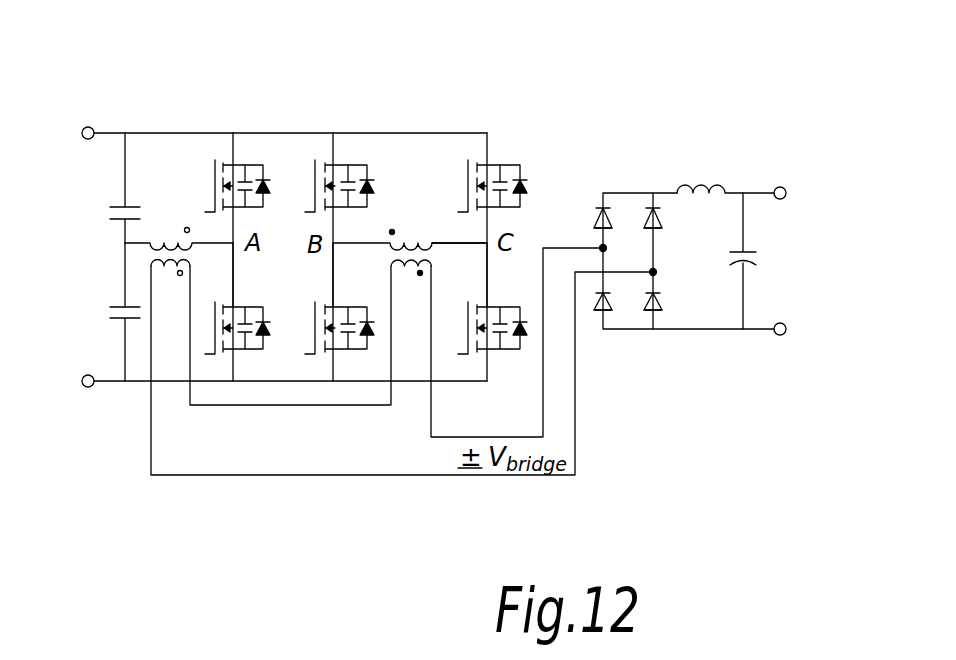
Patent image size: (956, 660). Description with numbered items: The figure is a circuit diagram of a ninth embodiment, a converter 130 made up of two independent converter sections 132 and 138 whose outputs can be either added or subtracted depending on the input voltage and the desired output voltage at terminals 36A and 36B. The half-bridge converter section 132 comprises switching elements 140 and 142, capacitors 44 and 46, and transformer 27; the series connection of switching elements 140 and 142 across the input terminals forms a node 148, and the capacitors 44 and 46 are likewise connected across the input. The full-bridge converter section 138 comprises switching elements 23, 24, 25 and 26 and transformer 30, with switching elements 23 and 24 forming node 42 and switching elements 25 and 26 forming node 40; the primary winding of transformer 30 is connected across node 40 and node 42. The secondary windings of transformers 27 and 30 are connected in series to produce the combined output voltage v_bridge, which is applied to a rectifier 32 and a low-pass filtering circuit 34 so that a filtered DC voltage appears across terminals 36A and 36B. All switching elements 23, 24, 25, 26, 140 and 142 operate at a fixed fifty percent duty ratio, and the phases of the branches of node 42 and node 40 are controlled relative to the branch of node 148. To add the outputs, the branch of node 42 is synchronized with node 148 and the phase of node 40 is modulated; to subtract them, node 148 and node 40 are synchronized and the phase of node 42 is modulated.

The converter 130 is at (100, 95).
The converter section 132 is at (227, 94).
The converter section 138 is at (489, 93).
The switching element 140 is at (250, 165).
The switching element 142 is at (253, 350).
The switching element 23 is at (340, 165).
The switching element 24 is at (338, 305).
The switching element 25 is at (493, 165).
The switching element 26 is at (503, 350).
The transformer 27 is at (205, 243).
The node 148 is at (234, 247).
The second node 42 is at (333, 243).
The transformer 30 is at (450, 243).
The first node 40 is at (487, 228).
The capacitor 44 is at (122, 222).
The capacitor 46 is at (122, 292).
The rectifier 32 is at (650, 160).
The filtering circuit 34 is at (743, 160).
The terminal 36A is at (785, 188).
The terminal 36B is at (779, 336).